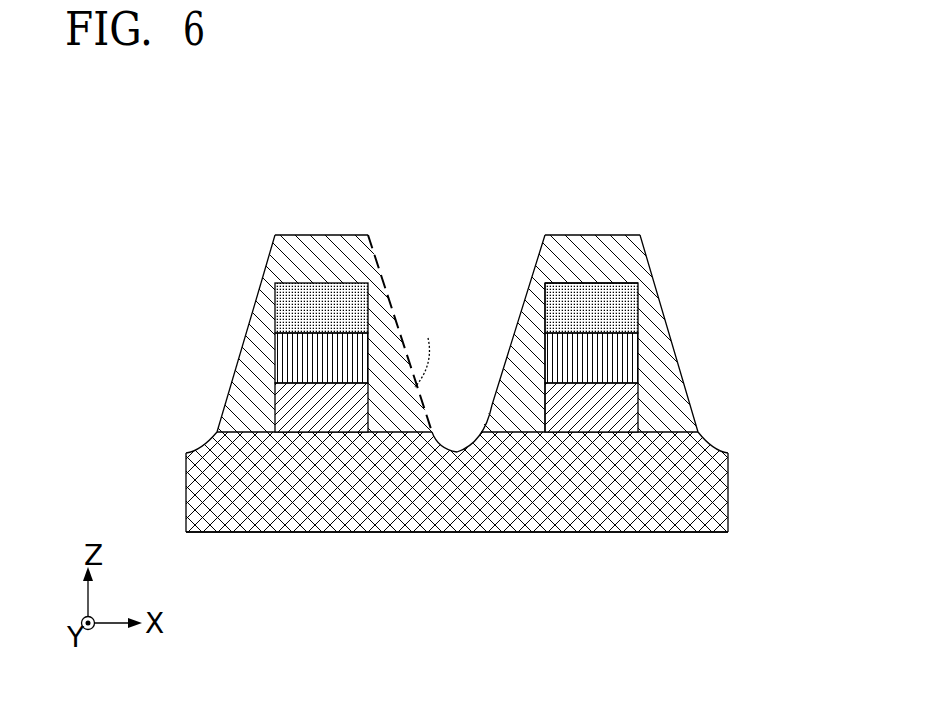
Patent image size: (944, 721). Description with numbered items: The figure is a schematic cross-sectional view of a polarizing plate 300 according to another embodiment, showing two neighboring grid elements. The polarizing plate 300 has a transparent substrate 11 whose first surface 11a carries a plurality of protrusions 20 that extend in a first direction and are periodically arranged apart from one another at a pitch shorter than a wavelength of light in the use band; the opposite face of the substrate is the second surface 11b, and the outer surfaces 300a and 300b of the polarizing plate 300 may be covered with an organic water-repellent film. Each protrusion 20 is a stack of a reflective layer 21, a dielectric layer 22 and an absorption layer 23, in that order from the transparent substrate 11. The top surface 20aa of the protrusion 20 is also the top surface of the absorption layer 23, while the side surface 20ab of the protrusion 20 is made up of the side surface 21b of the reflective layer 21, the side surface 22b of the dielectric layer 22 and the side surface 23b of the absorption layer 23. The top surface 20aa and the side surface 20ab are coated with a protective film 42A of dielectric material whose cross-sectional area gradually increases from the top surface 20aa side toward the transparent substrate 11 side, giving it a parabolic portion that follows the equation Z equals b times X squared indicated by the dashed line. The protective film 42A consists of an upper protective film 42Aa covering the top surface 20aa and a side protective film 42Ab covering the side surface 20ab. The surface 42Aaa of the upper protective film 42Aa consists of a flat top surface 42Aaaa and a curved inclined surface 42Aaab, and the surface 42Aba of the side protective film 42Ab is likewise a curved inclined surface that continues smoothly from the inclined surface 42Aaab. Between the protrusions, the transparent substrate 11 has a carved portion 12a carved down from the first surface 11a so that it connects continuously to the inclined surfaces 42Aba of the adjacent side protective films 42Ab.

The polarizing plate 300 is at (706, 128).
The surface of the polarizing plate 300a is at (625, 234).
The surface of the polarizing plate 300b is at (685, 532).
The transparent substrate 11 is at (695, 493).
The first surface of the transparent substrate 11a is at (250, 433).
The second surface of the transparent substrate 11b is at (242, 532).
The carved portion 12a is at (457, 450).
The protrusion 20 is at (756, 275).
The top surface of the protrusion 20aa is at (588, 282).
The side surface of the protrusion 20ab is at (557, 197).
The reflective layer 21 is at (617, 412).
The side surface of the reflecting layer 21b is at (545, 410).
The dielectric layer 22 is at (620, 360).
The side surface of the dielectric layer 22b is at (545, 352).
The absorption layer 23 is at (617, 310).
The side surface of the absorption layer 23b is at (545, 302).
The protective film 42A is at (130, 238).
The upper protective film 42Aa is at (293, 263).
The surface of the upper protective film 42Aaa is at (375, 177).
The top surface 42Aaaa is at (327, 235).
The inclined surface 42Aaab is at (268, 247).
The side protective film 42Ab is at (270, 388).
The surface of the side protective film 42Aba is at (243, 400).